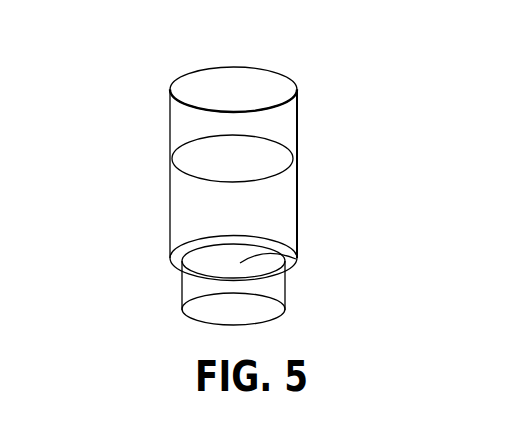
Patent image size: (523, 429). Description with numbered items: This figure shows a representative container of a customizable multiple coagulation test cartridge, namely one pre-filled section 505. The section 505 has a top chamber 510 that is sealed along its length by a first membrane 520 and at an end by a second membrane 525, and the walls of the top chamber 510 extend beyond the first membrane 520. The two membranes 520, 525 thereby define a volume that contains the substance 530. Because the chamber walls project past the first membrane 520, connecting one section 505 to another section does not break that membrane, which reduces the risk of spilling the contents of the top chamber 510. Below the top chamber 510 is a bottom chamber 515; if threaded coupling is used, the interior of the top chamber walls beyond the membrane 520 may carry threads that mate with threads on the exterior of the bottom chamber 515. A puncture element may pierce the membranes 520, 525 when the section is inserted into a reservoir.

The pre-filled section 505 is at (251, 196).
The top chamber 510 is at (171, 188).
The bottom chamber 515 is at (181, 295).
The first membrane 520 is at (253, 157).
The second membrane 525 is at (297, 260).
The substance 530 is at (250, 221).